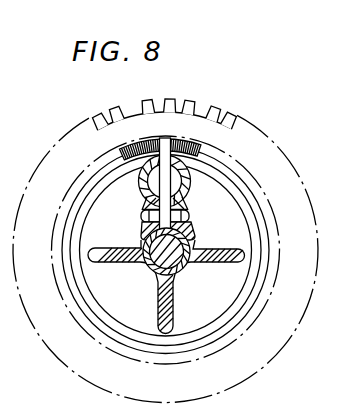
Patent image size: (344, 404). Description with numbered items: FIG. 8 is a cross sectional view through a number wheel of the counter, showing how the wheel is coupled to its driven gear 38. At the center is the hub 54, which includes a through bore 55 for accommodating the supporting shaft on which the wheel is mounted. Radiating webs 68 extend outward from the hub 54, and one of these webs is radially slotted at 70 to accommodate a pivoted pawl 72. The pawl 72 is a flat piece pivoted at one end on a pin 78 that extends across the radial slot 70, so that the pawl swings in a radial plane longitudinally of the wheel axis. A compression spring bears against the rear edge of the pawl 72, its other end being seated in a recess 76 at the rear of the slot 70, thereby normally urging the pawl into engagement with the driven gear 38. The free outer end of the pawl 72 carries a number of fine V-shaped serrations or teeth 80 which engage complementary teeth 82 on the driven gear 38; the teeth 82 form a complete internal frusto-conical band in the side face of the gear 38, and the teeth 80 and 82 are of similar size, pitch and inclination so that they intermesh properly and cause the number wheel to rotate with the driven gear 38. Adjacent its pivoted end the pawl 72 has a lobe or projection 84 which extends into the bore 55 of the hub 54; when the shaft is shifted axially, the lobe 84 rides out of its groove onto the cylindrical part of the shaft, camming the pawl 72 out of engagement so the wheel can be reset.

The driven gear 38 is at (202, 108).
The hub 54 is at (133, 264).
The through bore 55 is at (150, 272).
The radiating webs 68 is at (112, 249).
The radial slot 70 is at (185, 211).
The pawl 72 is at (184, 186).
The recess 76 is at (143, 204).
The pin 78 is at (191, 218).
The serrations or teeth 80 is at (171, 138).
The teeth 82 is at (132, 140).
The lobe or projection 84 is at (196, 240).